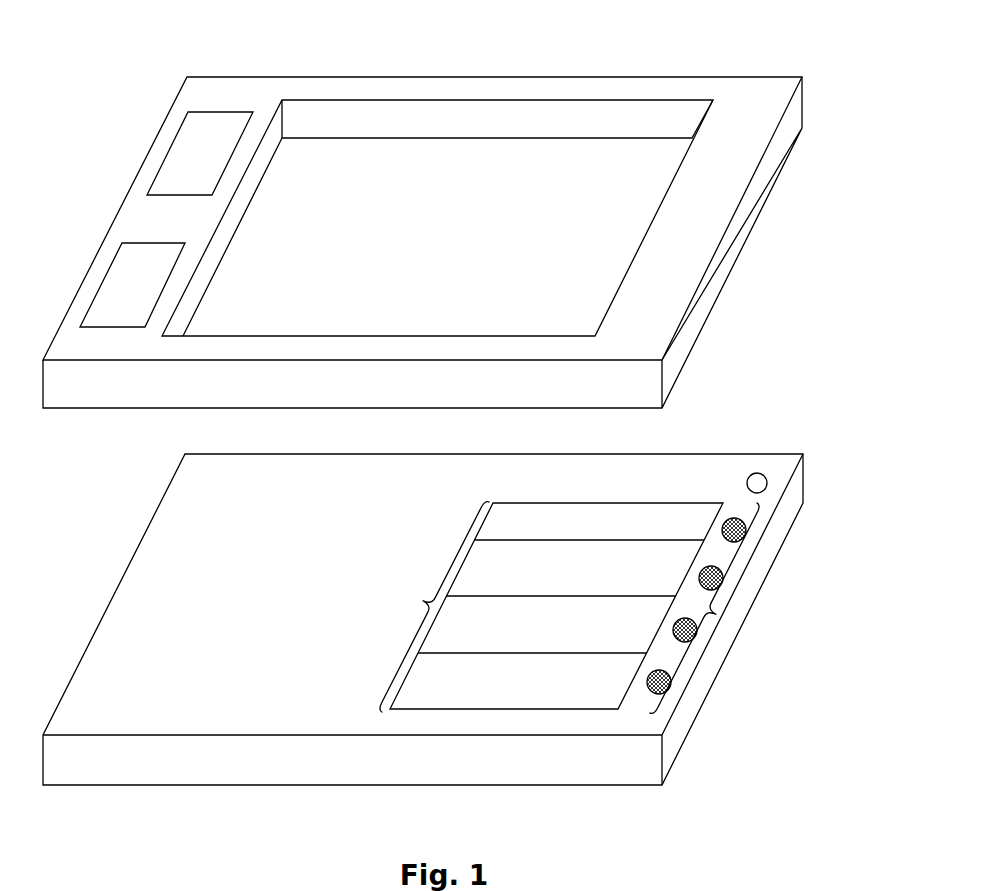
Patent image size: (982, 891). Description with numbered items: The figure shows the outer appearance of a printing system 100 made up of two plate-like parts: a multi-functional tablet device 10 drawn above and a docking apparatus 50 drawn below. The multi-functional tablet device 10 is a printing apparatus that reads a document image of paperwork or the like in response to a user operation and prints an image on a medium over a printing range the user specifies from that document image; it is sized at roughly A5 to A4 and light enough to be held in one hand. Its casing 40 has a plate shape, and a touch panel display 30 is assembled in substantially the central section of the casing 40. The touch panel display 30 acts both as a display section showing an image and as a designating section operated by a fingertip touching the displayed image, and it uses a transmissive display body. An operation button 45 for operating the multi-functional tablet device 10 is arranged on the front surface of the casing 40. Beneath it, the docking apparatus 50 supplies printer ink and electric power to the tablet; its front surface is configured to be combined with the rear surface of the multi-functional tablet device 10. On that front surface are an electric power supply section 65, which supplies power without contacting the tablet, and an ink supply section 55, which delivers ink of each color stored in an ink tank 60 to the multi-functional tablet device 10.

The printing system 100 is at (441, 403).
The multi-functional tablet device 10 is at (422, 215).
The docking apparatus 50 is at (440, 598).
The touch panel display 30 is at (423, 173).
The casing 40 is at (757, 100).
The operation button 45 is at (173, 140).
The ink supply section 55 is at (717, 614).
The ink tank 60 is at (546, 603).
The electric power supply section 65 is at (760, 483).